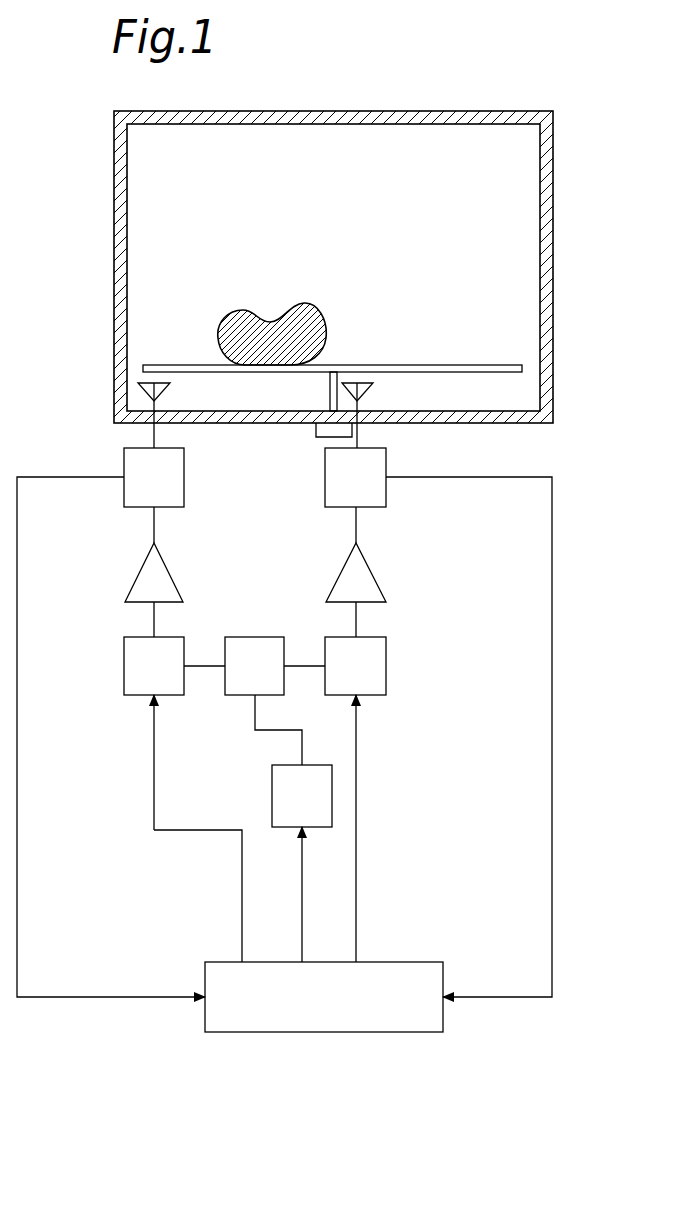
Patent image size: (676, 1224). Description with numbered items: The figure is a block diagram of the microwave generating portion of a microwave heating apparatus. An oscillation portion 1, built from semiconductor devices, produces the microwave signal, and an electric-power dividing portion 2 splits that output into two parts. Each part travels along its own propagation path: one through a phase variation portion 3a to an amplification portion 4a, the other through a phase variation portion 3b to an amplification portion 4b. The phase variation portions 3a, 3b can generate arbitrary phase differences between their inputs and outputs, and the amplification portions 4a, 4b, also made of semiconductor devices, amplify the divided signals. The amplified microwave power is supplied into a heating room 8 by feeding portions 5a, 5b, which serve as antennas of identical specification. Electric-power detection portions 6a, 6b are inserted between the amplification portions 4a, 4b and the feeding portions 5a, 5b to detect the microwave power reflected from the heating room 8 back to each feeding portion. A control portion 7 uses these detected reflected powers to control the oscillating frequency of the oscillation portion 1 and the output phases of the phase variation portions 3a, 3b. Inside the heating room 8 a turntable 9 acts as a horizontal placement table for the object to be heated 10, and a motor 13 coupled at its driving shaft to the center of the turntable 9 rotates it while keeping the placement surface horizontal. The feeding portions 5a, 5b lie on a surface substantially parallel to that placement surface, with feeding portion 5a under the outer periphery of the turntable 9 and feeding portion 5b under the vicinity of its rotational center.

The oscillation portion 1 is at (325, 800).
The electric-power dividing portion 2 is at (243, 690).
The phase variation portion 3a is at (135, 690).
The phase variation portion 3b is at (375, 692).
The amplification portion 4a is at (135, 596).
The amplification portion 4b is at (375, 597).
The feeding portion 5a is at (153, 399).
The feeding portion 5b is at (360, 388).
The electric-power detection portion 6a is at (142, 502).
The electric-power detection portion 6b is at (370, 506).
The control portion 7 is at (390, 1027).
The heating room 8 is at (477, 111).
The turntable 9 is at (505, 362).
The object to be heated 10 is at (300, 302).
The motor 13 is at (326, 437).